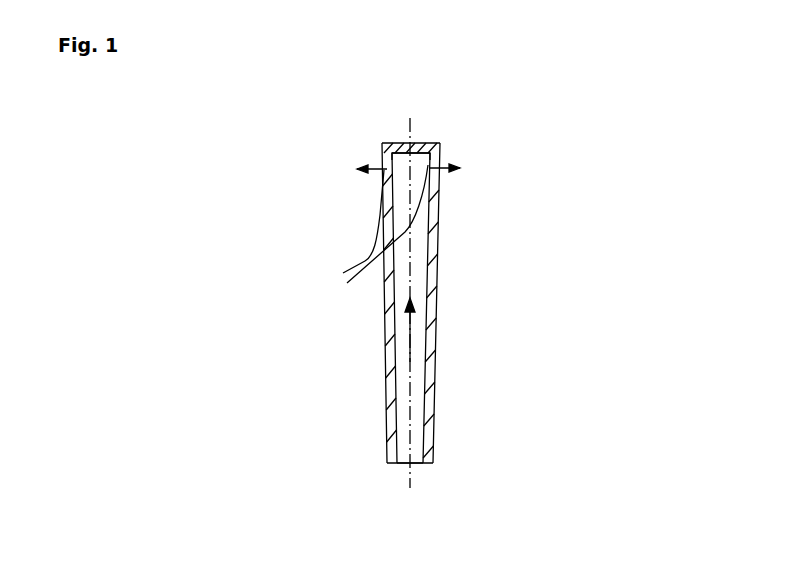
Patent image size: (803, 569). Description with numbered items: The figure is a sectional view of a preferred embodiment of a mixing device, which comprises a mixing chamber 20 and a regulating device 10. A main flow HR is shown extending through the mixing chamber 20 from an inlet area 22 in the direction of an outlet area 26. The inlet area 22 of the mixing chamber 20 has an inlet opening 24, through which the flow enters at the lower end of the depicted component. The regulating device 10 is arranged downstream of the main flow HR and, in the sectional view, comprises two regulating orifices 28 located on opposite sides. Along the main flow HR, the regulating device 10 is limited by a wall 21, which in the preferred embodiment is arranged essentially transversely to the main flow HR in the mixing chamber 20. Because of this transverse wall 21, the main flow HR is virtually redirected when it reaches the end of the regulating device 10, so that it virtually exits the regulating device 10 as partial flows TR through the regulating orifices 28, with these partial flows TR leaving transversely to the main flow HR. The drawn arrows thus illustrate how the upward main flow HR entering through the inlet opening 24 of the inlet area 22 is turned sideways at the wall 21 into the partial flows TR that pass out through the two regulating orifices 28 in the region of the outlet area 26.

The regulating device 10 is at (470, 168).
The mixing chamber 20 is at (318, 226).
The wall 21 is at (413, 150).
The inlet area 22 is at (460, 452).
The inlet opening 24 is at (402, 465).
The outlet area 26 is at (462, 153).
The regulating orifices 28 is at (370, 167).
The partial flows TR is at (365, 231).
The main flow HR is at (410, 338).